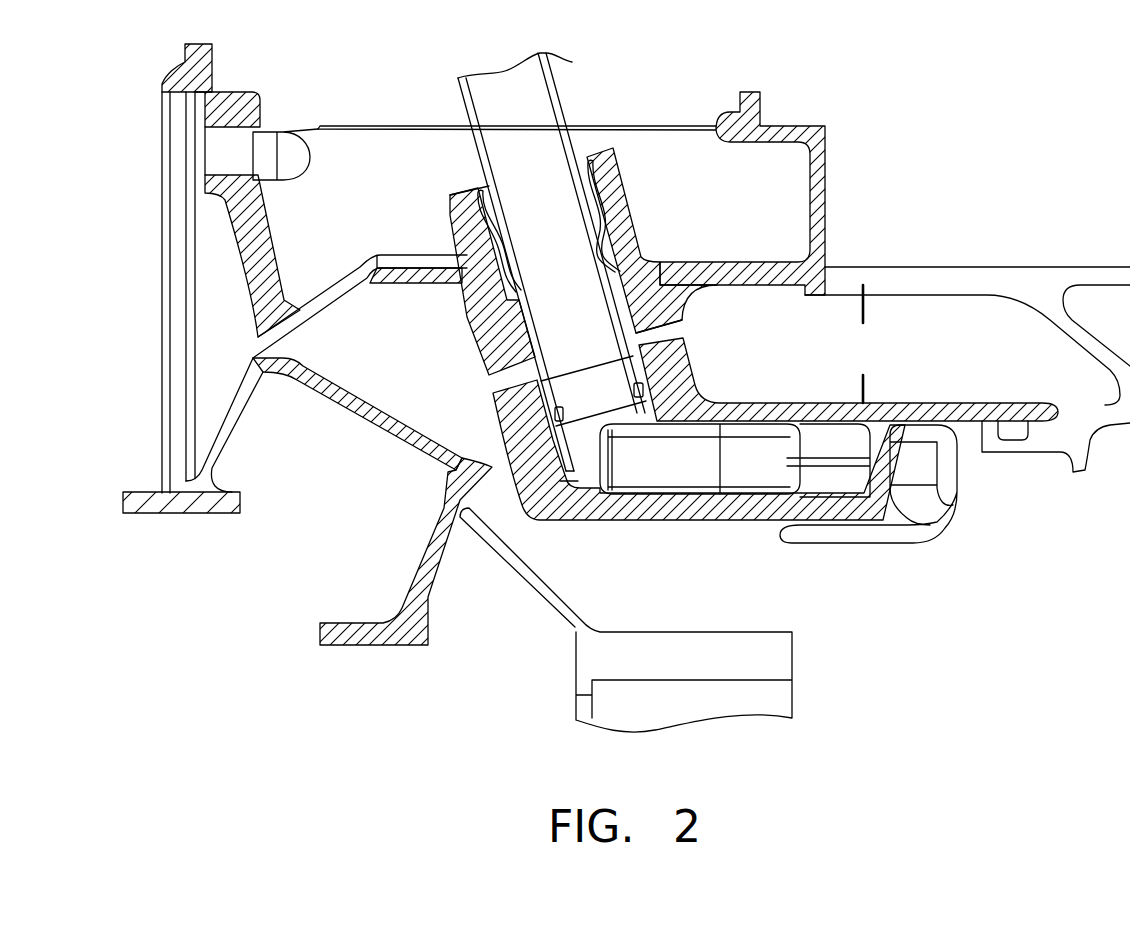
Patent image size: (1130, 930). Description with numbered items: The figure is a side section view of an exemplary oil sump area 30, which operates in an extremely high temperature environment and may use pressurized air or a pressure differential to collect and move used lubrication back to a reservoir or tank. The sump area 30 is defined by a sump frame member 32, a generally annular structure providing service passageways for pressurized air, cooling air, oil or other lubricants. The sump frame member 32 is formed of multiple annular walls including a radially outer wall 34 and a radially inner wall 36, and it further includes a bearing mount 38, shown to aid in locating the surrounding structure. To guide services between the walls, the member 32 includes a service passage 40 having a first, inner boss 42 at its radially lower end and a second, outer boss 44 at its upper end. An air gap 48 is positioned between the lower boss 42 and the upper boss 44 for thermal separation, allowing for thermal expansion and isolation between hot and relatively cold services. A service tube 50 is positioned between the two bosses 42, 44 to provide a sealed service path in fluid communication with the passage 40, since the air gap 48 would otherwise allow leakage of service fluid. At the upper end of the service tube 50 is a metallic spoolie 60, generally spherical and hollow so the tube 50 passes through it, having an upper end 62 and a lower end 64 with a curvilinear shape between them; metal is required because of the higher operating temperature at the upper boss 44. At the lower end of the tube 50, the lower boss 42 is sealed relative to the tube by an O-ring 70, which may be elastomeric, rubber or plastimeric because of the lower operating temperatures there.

The oil sump area 30 is at (352, 72).
The sump frame member 32 is at (826, 112).
The radially outer wall 34 is at (390, 267).
The radially inner wall 36 is at (485, 453).
The bearing mount 38 is at (723, 630).
The service passage 40 is at (626, 458).
The inner boss 42 is at (673, 357).
The outer boss 44 is at (614, 165).
The air gap 48 is at (690, 313).
The service tube 50 is at (547, 64).
The spoolie 60 is at (460, 217).
The upper end 62 is at (477, 190).
The lower end 64 is at (480, 330).
The O-ring 70 is at (555, 413).